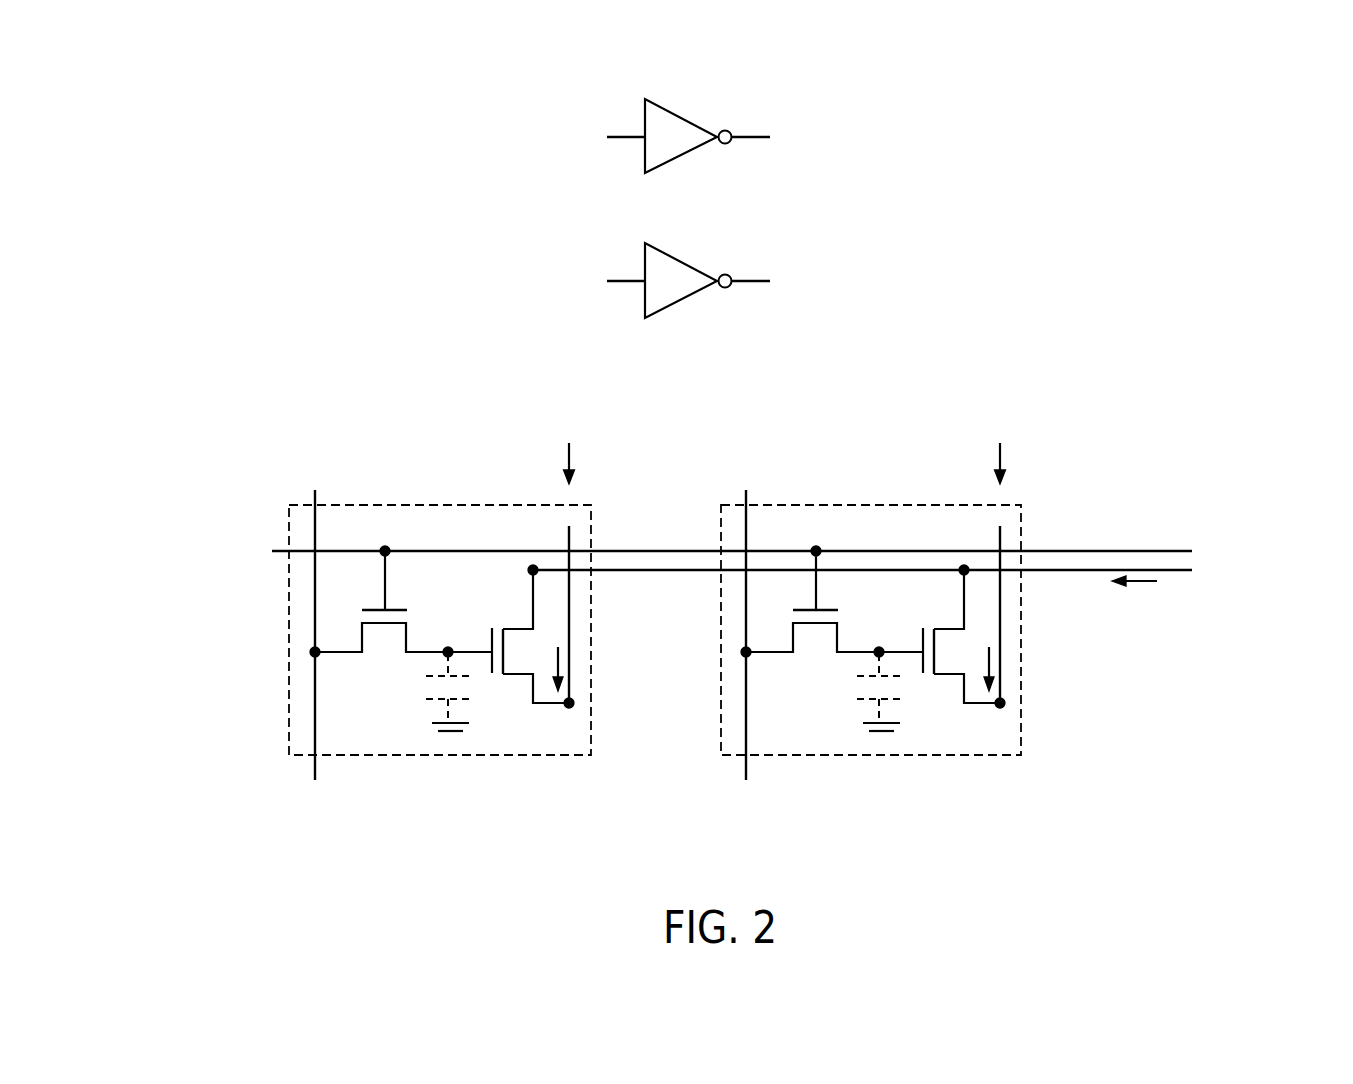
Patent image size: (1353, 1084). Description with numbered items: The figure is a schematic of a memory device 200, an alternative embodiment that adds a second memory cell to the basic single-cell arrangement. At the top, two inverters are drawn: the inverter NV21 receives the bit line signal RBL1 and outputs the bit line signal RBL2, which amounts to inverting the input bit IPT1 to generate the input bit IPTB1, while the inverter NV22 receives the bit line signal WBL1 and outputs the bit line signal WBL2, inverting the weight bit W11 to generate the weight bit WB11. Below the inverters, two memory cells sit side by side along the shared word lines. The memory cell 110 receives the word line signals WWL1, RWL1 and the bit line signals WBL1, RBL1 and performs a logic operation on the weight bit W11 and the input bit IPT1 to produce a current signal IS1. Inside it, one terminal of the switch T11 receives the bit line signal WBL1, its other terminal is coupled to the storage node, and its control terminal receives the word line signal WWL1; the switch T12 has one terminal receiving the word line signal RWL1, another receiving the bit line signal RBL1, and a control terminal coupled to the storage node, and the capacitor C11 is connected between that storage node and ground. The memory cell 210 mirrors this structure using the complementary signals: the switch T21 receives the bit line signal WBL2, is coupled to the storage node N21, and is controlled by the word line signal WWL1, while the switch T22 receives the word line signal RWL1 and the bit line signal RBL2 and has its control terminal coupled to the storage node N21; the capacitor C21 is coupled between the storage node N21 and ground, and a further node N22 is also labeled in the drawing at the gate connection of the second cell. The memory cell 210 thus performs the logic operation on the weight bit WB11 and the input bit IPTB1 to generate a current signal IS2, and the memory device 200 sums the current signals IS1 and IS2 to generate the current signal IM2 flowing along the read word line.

The memory device 200 is at (170, 80).
The inverter NV21 is at (680, 115).
The inverter NV22 is at (680, 259).
The bit line signal RBL1 is at (566, 414).
The bit line signal RBL2 is at (866, 414).
The bit line signal WBL1 is at (460, 524).
The bit line signal WBL2 is at (780, 524).
The word line signal WWL1 is at (687, 551).
The word line signal RWL1 is at (905, 571).
The input bit IPT1 is at (569, 444).
The input bit IPTB1 is at (1002, 444).
The memory cell 110 is at (448, 755).
The memory cell 210 is at (879, 755).
The switch T11 is at (403, 612).
The switch T12 is at (533, 636).
The switch T21 is at (834, 614).
The switch T22 is at (964, 636).
The weight bit W11 is at (445, 634).
The weight bit WB11 is at (882, 634).
The capacitor C11 is at (432, 700).
The capacitor C21 is at (862, 700).
The current signal IS1 is at (560, 662).
The current signal IS2 is at (991, 662).
The current signal IM2 is at (1145, 582).
The gate node of write transistor N22 is at (816, 548).
The storage node N21 is at (884, 655).